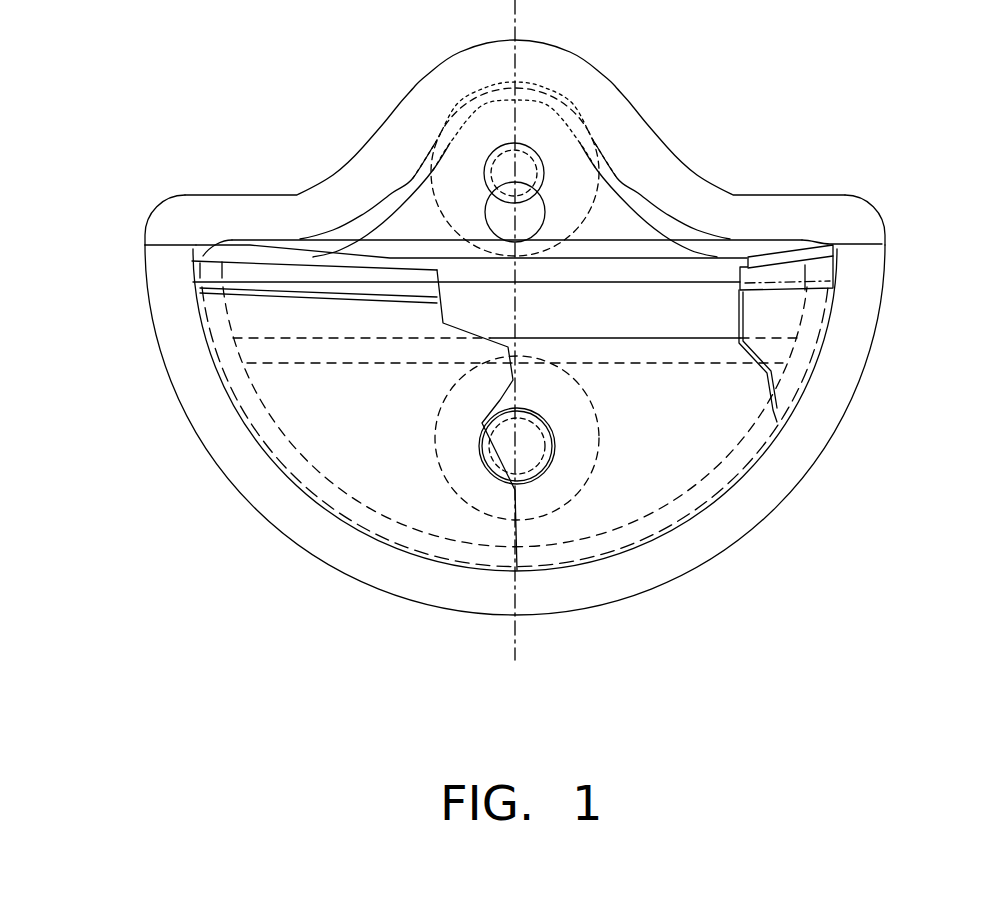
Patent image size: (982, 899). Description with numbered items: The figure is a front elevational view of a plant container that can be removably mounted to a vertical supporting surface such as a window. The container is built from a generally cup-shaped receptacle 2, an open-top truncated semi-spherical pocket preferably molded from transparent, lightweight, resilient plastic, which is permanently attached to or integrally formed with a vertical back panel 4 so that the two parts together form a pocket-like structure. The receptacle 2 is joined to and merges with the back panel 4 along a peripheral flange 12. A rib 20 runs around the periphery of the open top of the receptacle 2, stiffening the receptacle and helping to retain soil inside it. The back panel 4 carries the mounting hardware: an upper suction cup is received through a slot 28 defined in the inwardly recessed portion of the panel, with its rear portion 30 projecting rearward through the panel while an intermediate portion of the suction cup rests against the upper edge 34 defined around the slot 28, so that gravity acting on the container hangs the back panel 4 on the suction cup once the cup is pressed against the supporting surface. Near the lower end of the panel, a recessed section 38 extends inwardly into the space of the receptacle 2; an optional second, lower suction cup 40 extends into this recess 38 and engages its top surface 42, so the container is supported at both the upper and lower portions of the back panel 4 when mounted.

The cup-shaped receptacle 2 is at (260, 445).
The back panel 4 is at (160, 203).
The flange 12 is at (157, 330).
The rib 20 is at (240, 275).
The slot 28 is at (547, 202).
The rear portion of the suction cup 30 is at (515, 165).
The upper edge 34 is at (485, 163).
The recessed section 38 is at (553, 450).
The lower suction cup 40 is at (530, 472).
The top surface of the recess 42 is at (527, 408).